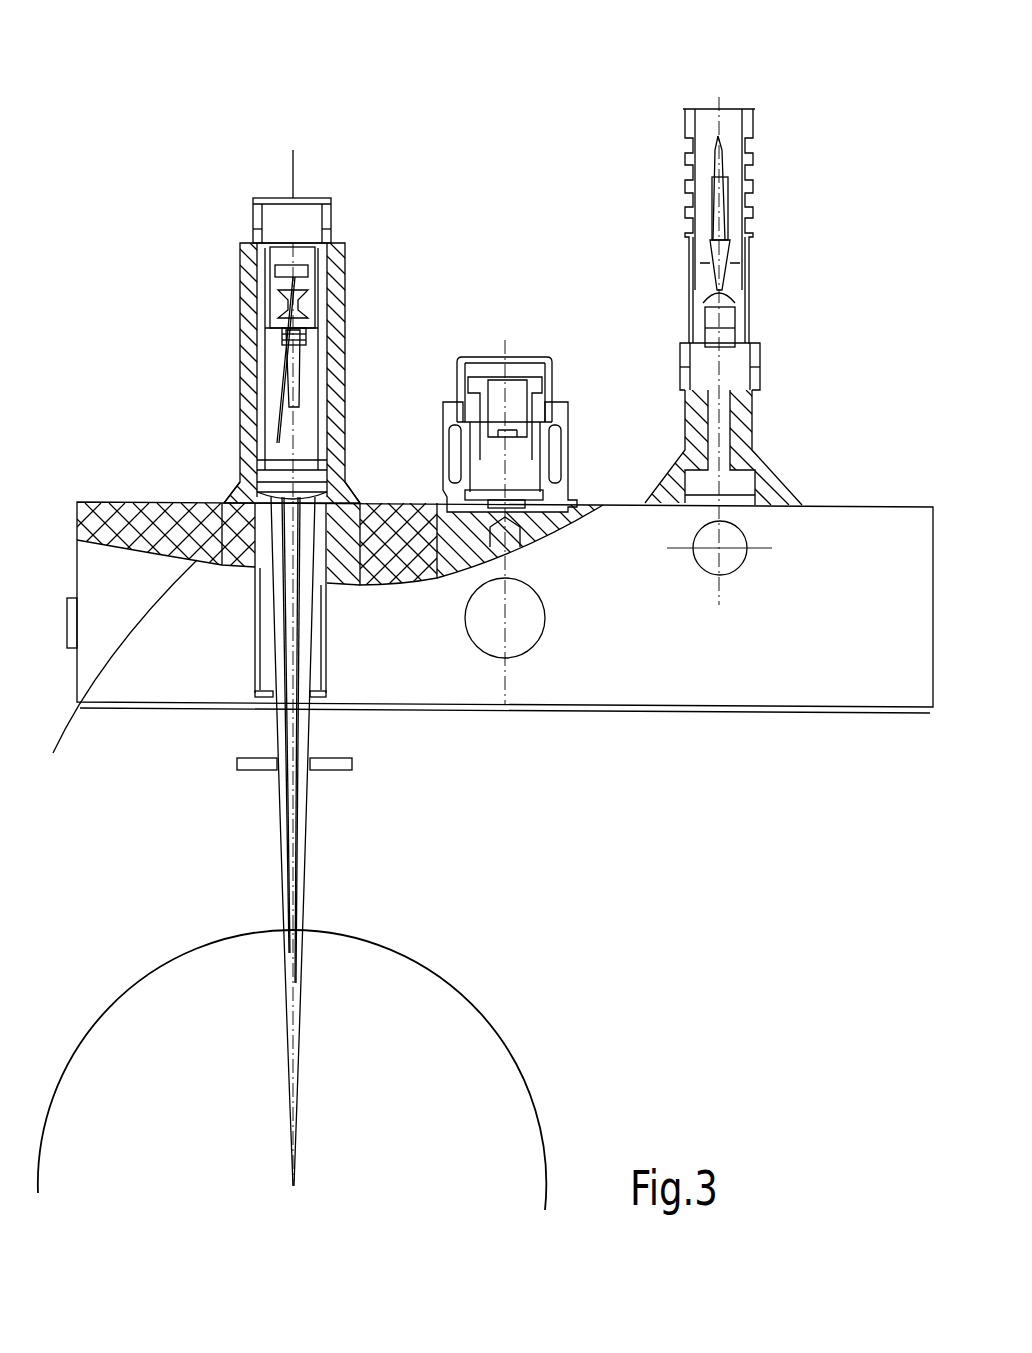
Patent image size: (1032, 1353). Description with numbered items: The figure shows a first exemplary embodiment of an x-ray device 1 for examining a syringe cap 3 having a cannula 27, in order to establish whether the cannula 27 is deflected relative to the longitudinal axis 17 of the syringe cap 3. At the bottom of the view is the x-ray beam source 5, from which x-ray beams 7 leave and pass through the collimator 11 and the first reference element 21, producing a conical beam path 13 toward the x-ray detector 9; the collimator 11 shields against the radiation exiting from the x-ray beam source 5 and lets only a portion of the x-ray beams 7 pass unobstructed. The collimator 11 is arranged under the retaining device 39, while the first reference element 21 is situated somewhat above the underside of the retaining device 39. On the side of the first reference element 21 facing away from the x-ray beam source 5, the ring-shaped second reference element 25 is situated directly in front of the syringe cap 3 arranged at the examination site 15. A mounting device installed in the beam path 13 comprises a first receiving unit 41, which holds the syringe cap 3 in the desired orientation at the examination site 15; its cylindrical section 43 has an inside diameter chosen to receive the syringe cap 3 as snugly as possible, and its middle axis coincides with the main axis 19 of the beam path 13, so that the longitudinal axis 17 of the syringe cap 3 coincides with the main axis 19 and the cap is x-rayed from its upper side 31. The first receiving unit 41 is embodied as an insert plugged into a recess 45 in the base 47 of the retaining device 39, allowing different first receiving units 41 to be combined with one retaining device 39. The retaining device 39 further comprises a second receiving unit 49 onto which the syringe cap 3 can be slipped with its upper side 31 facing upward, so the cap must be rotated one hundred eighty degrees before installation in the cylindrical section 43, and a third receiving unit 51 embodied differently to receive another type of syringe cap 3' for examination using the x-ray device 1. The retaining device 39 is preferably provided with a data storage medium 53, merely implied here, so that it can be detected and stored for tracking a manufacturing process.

The x-ray device 1 is at (160, 906).
The syringe cap 3 is at (482, 263).
The another type of syringe cap 3' is at (540, 378).
The x-ray beam source 5 is at (217, 1086).
The x-ray beams 7 is at (305, 888).
The x-ray detector 9 is at (281, 96).
The collimator 11 is at (352, 762).
The beam path 13 is at (310, 655).
The examination site 15 is at (216, 373).
The longitudinal axis 17 is at (293, 187).
The main axis 19 is at (290, 730).
The first reference element 21 is at (253, 687).
The second reference element 25 is at (118, 673).
The cannula 27 is at (285, 372).
The upper side 31 is at (730, 105).
The retaining device 39 is at (862, 684).
The first receiving unit 41 is at (351, 479).
The cylindrical section 43 is at (242, 307).
The recess 45 is at (363, 530).
The base 47 is at (100, 526).
The second receiving unit 49 is at (762, 420).
The third receiving unit 51 is at (583, 408).
The data storage medium 53 is at (540, 642).